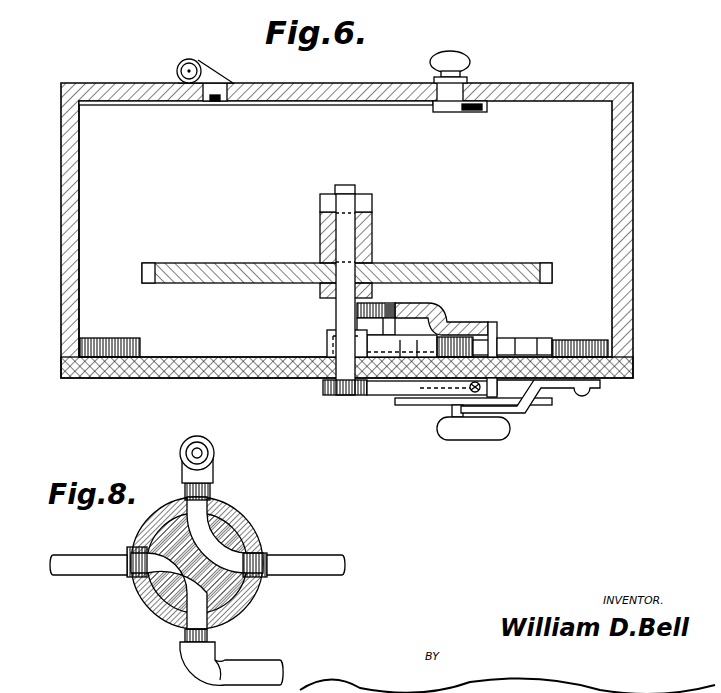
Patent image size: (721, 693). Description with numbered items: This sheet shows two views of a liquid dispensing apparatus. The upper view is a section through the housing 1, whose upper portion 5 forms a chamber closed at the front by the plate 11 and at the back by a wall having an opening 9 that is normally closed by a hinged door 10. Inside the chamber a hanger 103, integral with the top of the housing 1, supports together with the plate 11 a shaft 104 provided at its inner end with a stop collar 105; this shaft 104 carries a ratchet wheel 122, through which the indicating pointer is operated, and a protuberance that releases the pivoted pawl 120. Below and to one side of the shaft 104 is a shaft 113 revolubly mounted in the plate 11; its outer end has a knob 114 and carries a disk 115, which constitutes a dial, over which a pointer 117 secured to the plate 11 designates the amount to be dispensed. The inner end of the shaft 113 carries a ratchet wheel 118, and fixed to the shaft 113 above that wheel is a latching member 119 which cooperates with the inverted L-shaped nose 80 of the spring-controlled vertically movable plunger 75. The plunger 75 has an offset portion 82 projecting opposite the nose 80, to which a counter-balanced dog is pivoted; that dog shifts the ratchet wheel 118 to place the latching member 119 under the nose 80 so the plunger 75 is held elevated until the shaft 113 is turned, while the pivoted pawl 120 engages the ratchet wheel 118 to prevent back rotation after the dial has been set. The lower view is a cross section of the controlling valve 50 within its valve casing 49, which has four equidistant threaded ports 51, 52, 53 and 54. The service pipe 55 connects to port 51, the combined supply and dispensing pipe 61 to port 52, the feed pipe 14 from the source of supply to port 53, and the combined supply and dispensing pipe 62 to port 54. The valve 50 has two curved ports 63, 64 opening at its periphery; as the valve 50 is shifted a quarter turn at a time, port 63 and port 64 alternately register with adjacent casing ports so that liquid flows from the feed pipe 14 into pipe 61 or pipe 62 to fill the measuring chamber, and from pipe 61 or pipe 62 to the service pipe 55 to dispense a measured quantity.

In FIG. 6, the housing 1 is at (635, 83).
In FIG. 6, the upper portion 5 is at (62, 199).
In FIG. 6, the opening 9 is at (490, 89).
In FIG. 6, the hinged door 10 is at (326, 89).
In FIG. 6, the plate 11 is at (288, 370).
In FIG. 6, the plunger 75 is at (408, 306).
In FIG. 6, the nose 80 is at (499, 341).
In FIG. 6, the offset portion 82 is at (358, 309).
In FIG. 6, the hanger 103 is at (373, 236).
In FIG. 6, the shaft 104 is at (347, 273).
In FIG. 6, the stop collar 105 is at (372, 199).
In FIG. 6, the shaft 113 is at (432, 387).
In FIG. 6, the knob 114 is at (491, 430).
In FIG. 6, the disk 115 is at (437, 402).
In FIG. 6, the pointer 117 is at (531, 400).
In FIG. 6, the ratchet wheel 118 is at (532, 349).
In FIG. 6, the latching member 119 is at (436, 347).
In FIG. 6, the pivoted pawl 120 is at (466, 352).
In FIG. 6, the ratchet wheel 122 is at (220, 270).
In FIG. 8, the feed pipe 14 is at (213, 670).
In FIG. 8, the valve casing 49 is at (248, 548).
In FIG. 8, the controlling valve 50 is at (222, 545).
In FIG. 8, the port 51 is at (212, 503).
In FIG. 8, the port 52 is at (264, 556).
In FIG. 8, the port 53 is at (184, 632).
In FIG. 8, the port 54 is at (131, 577).
In FIG. 8, the service pipe 55 is at (203, 478).
In FIG. 8, the combined supply and dispensing pipe 61 is at (316, 566).
In FIG. 8, the combined supply and dispensing pipe 62 is at (77, 563).
In FIG. 8, the curved port 63 is at (222, 537).
In FIG. 8, the curved port 64 is at (182, 574).